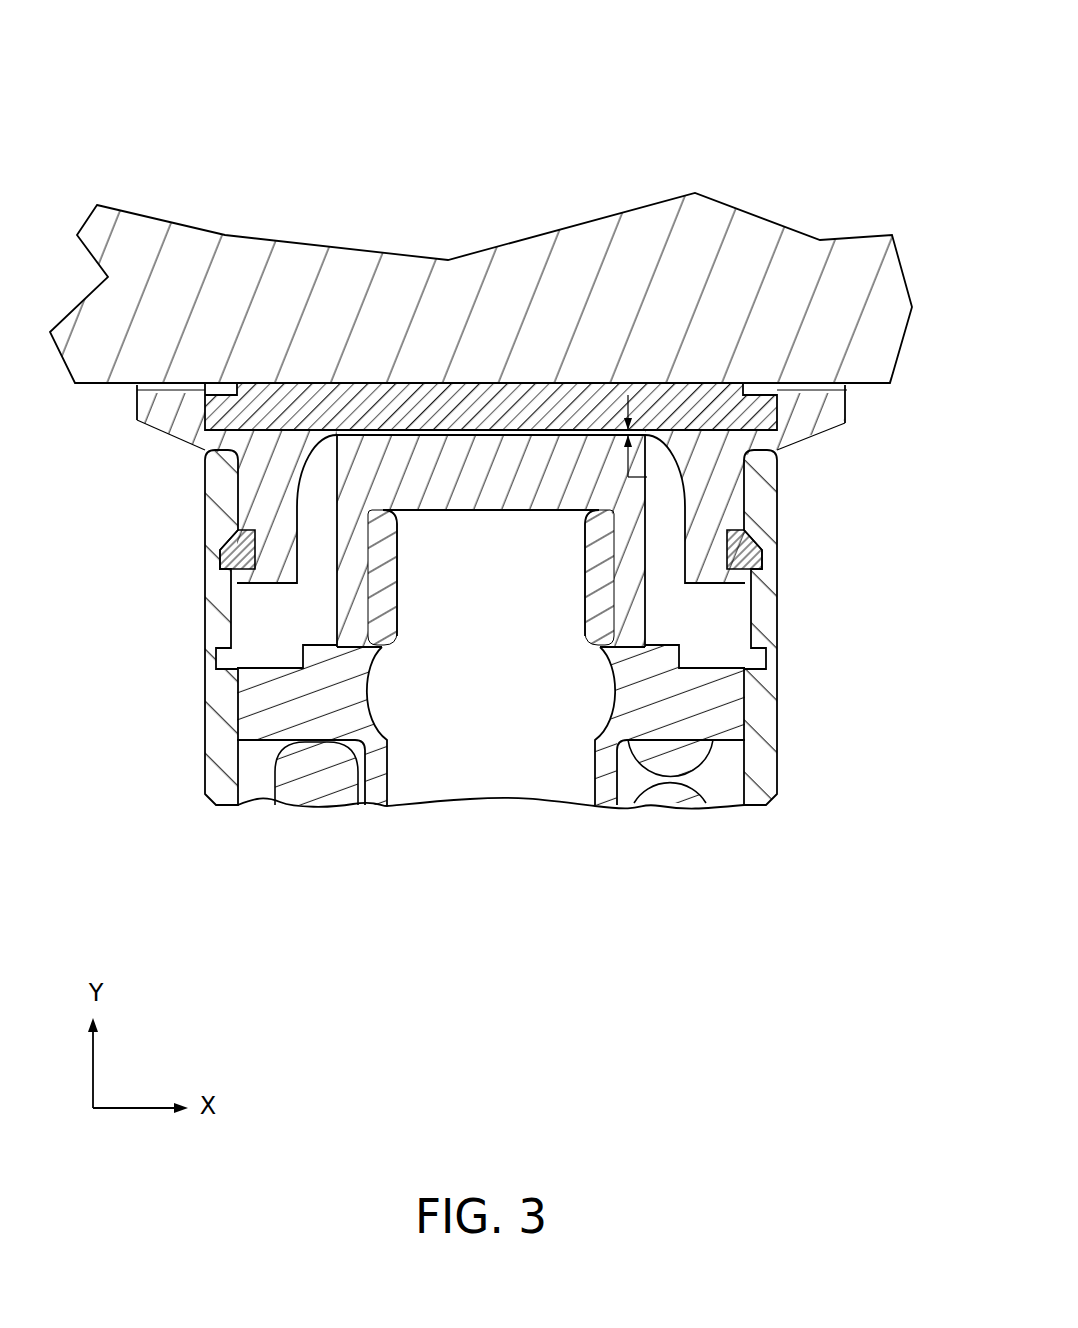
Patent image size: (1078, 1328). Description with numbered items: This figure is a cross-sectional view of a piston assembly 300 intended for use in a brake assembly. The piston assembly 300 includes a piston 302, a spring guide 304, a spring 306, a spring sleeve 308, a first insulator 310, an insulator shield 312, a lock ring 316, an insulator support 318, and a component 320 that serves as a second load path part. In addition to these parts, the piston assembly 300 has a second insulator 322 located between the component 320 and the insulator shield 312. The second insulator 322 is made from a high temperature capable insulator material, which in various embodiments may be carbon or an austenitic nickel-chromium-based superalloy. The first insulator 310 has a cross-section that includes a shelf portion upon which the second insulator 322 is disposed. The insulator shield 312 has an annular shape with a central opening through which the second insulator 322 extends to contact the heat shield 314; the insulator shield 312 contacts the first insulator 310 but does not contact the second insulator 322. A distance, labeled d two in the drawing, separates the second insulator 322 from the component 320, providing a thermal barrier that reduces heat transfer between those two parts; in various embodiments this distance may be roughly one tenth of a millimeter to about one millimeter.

The piston assembly 300 is at (188, 122).
The piston 302 is at (763, 788).
The spring guide 304 is at (372, 795).
The spring 306 is at (297, 793).
The spring sleeve 308 is at (725, 787).
The first insulator 310 is at (138, 420).
The insulator shield 312 is at (143, 388).
The heat shield 314 is at (903, 320).
The lock ring 316 is at (208, 655).
The insulator support 318 is at (222, 552).
The component 320 is at (503, 437).
The second insulator 322 is at (385, 400).